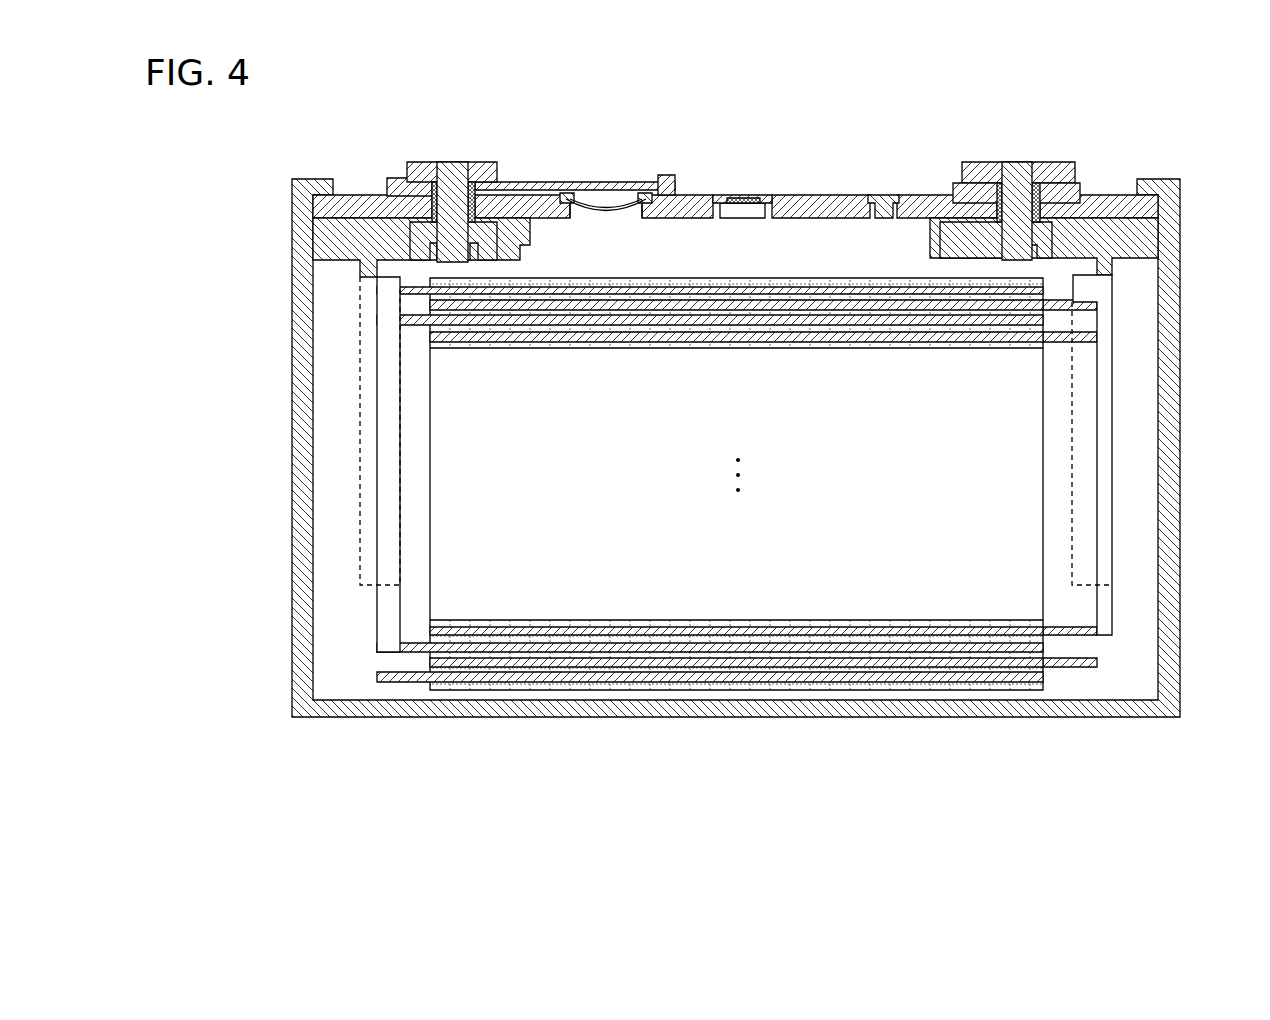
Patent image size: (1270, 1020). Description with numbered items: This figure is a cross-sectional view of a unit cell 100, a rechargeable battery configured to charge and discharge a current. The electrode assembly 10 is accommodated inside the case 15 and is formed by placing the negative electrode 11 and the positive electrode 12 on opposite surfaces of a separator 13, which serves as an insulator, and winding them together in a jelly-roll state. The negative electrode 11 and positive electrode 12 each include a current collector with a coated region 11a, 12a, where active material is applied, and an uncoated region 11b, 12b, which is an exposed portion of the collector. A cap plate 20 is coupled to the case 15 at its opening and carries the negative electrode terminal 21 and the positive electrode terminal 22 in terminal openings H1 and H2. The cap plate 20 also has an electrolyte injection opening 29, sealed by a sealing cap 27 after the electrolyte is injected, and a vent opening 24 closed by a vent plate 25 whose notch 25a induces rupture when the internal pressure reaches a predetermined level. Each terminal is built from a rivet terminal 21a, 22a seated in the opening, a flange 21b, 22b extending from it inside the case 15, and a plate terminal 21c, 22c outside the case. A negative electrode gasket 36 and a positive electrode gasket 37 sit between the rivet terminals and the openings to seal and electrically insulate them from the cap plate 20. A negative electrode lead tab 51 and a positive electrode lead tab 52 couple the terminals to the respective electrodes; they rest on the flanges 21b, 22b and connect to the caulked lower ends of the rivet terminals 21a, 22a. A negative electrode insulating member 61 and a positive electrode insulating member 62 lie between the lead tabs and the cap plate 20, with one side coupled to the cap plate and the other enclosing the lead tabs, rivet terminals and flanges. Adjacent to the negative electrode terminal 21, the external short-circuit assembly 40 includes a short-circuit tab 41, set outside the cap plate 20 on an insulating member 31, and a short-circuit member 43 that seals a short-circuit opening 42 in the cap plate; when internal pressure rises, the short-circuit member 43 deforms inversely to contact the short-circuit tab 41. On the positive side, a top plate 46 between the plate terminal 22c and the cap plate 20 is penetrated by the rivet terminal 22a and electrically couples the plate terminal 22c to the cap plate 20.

The unit cell 100 is at (770, 103).
The electrode assembly 10 is at (853, 704).
The case 15 is at (1172, 392).
The cap plate 20 is at (820, 196).
The vent opening 24 is at (745, 216).
The vent plate 25 is at (762, 196).
The notch 25a is at (736, 198).
The sealing cap 27 is at (890, 205).
The electrolyte injection opening 29 is at (878, 195).
The external short-circuit assembly 40 is at (578, 178).
The short-circuit tab 41 is at (577, 181).
The short-circuit opening 42 is at (634, 210).
The short-circuit member 43 is at (592, 216).
The insulating member 31 is at (666, 174).
The negative electrode insulating member 61 is at (332, 233).
The positive electrode insulating member 62 is at (1140, 236).
The negative electrode terminal 21 is at (450, 252).
The rivet terminal 21a is at (458, 263).
The flange 21b is at (490, 216).
The plate terminal 21c is at (478, 162).
The negative electrode gasket 36 is at (398, 184).
The terminal opening H1 is at (435, 185).
The positive electrode terminal 22 is at (1054, 207).
The rivet terminal 22a is at (1020, 262).
The flange 22b is at (972, 240).
The plate terminal 22c is at (1060, 165).
The positive electrode gasket 37 is at (998, 189).
The top plate 46 is at (1086, 196).
The terminal opening H2 is at (1036, 185).
The separator 13 is at (755, 691).
The negative electrode 11 is at (710, 541).
The coated region 11a is at (530, 666).
The uncoated region 11b is at (401, 524).
The positive electrode 12 is at (771, 543).
The coated region 12a is at (965, 669).
The uncoated region 12b is at (1087, 525).
The negative electrode lead tab 51 is at (353, 400).
The positive electrode lead tab 52 is at (1117, 548).